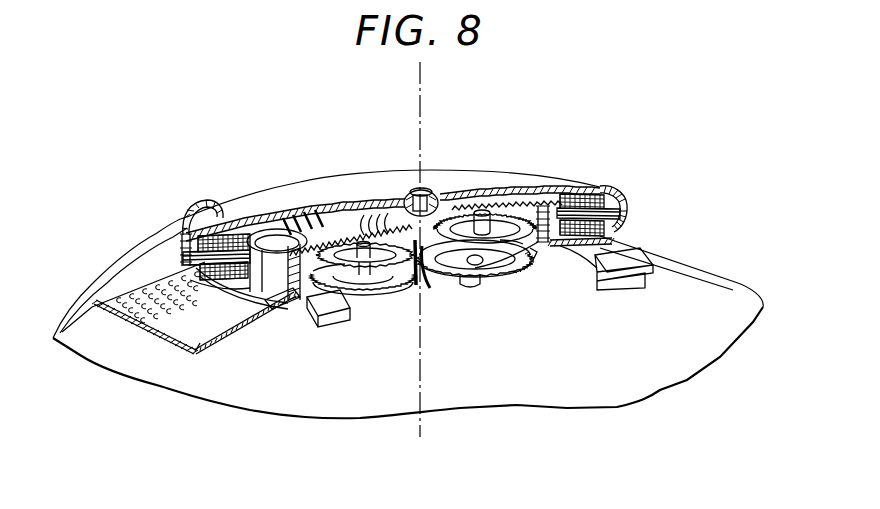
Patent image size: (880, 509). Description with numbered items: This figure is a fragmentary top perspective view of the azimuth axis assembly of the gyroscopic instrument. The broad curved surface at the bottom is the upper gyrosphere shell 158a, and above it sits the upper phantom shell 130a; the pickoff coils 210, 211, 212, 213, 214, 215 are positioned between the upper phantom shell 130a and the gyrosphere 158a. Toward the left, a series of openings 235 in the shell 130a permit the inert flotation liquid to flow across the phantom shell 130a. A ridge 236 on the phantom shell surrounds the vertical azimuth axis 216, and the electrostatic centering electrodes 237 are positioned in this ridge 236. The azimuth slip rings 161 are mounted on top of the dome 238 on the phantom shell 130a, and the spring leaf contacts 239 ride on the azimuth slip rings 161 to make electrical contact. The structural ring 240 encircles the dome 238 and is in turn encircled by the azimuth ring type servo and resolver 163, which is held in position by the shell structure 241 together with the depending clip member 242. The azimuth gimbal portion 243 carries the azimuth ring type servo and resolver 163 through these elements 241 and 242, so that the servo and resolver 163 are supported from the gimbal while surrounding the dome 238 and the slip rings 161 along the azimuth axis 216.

The upper gyrosphere shell 158a is at (518, 397).
The upper phantom shell 130a is at (197, 345).
The openings 235 is at (170, 315).
The ridge 236 is at (271, 300).
The electrostatic centering electrodes 237 is at (337, 312).
The dome 238 is at (320, 310).
The spring leaf contacts 239 is at (300, 220).
The structural ring 240 is at (271, 272).
The shell structure 241 is at (613, 188).
The depending clip member 242 is at (181, 259).
The azimuth gimbal portion 243 is at (187, 218).
The azimuth slip rings 161 is at (345, 220).
The azimuth ring type servo and resolver 163 is at (607, 234).
The axis 216 is at (422, 107).
The pickoff coil 210 is at (523, 242).
The pickoff coil 211 is at (421, 268).
The pickoff coil 212 is at (530, 252).
The pickoff coil 213 is at (378, 280).
The pickoff coil 214 is at (438, 250).
The pickoff coil 215 is at (518, 274).